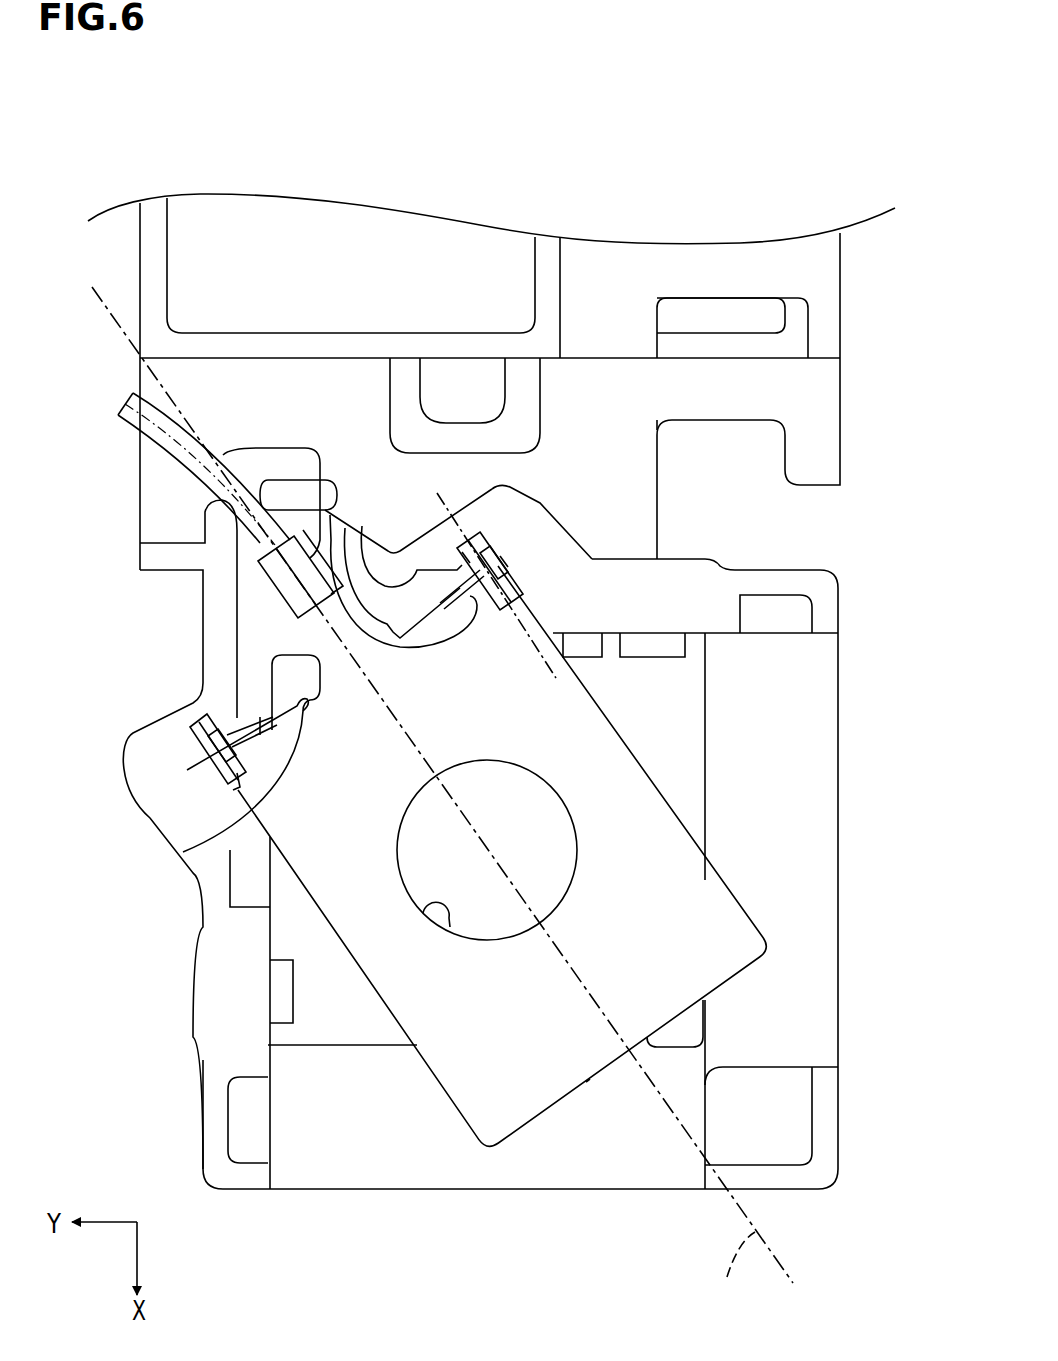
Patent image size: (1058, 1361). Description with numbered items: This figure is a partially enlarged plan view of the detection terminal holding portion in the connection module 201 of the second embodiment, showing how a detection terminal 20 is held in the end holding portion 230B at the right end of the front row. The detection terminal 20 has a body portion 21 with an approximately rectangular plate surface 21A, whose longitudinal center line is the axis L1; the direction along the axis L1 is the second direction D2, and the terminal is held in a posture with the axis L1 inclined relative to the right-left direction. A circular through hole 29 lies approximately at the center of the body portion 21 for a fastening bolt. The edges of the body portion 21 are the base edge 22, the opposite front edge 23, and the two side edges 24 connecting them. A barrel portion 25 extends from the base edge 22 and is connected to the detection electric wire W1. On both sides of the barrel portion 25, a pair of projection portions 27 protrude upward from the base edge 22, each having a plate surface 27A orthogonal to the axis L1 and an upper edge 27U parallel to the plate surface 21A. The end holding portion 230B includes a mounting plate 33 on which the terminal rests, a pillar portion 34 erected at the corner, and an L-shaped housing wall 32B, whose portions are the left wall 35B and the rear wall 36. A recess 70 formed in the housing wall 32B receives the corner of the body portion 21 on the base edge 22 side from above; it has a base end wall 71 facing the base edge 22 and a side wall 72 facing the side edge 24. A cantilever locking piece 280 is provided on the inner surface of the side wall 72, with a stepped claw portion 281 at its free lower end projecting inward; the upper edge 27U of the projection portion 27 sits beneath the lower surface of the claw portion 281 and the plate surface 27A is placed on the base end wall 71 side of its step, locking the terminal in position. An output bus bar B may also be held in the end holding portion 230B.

The connection module 201 is at (195, 130).
The upper edge 27U is at (333, 480).
The projection portion 27 is at (305, 392).
The plate surface 27A is at (370, 655).
The base end wall 71 is at (427, 537).
The recess 70 is at (467, 513).
The side wall 72 is at (516, 512).
The claw portion 281 is at (100, 797).
The locking piece 280 is at (360, 499).
The end holding portion 230B is at (650, 690).
The detection electric wire W1 is at (138, 422).
The rear wall 36 is at (713, 597).
The housing wall 32B is at (498, 836).
The barrel portion 25 is at (300, 593).
The side edge 24 is at (640, 767).
The plate surface 21A is at (658, 918).
The body portion 21 is at (550, 856).
The base edge 22 is at (240, 837).
The mounting plate 33 is at (740, 1027).
The left wall 35B is at (230, 1043).
The pillar portion 34 is at (778, 1142).
The through hole 29 is at (449, 928).
The detection terminal 20 is at (500, 1107).
The front edge 23 is at (586, 1082).
The output bus bar B is at (437, 493).
The axis L1 is at (452, 801).
The second direction D2 is at (737, 1270).